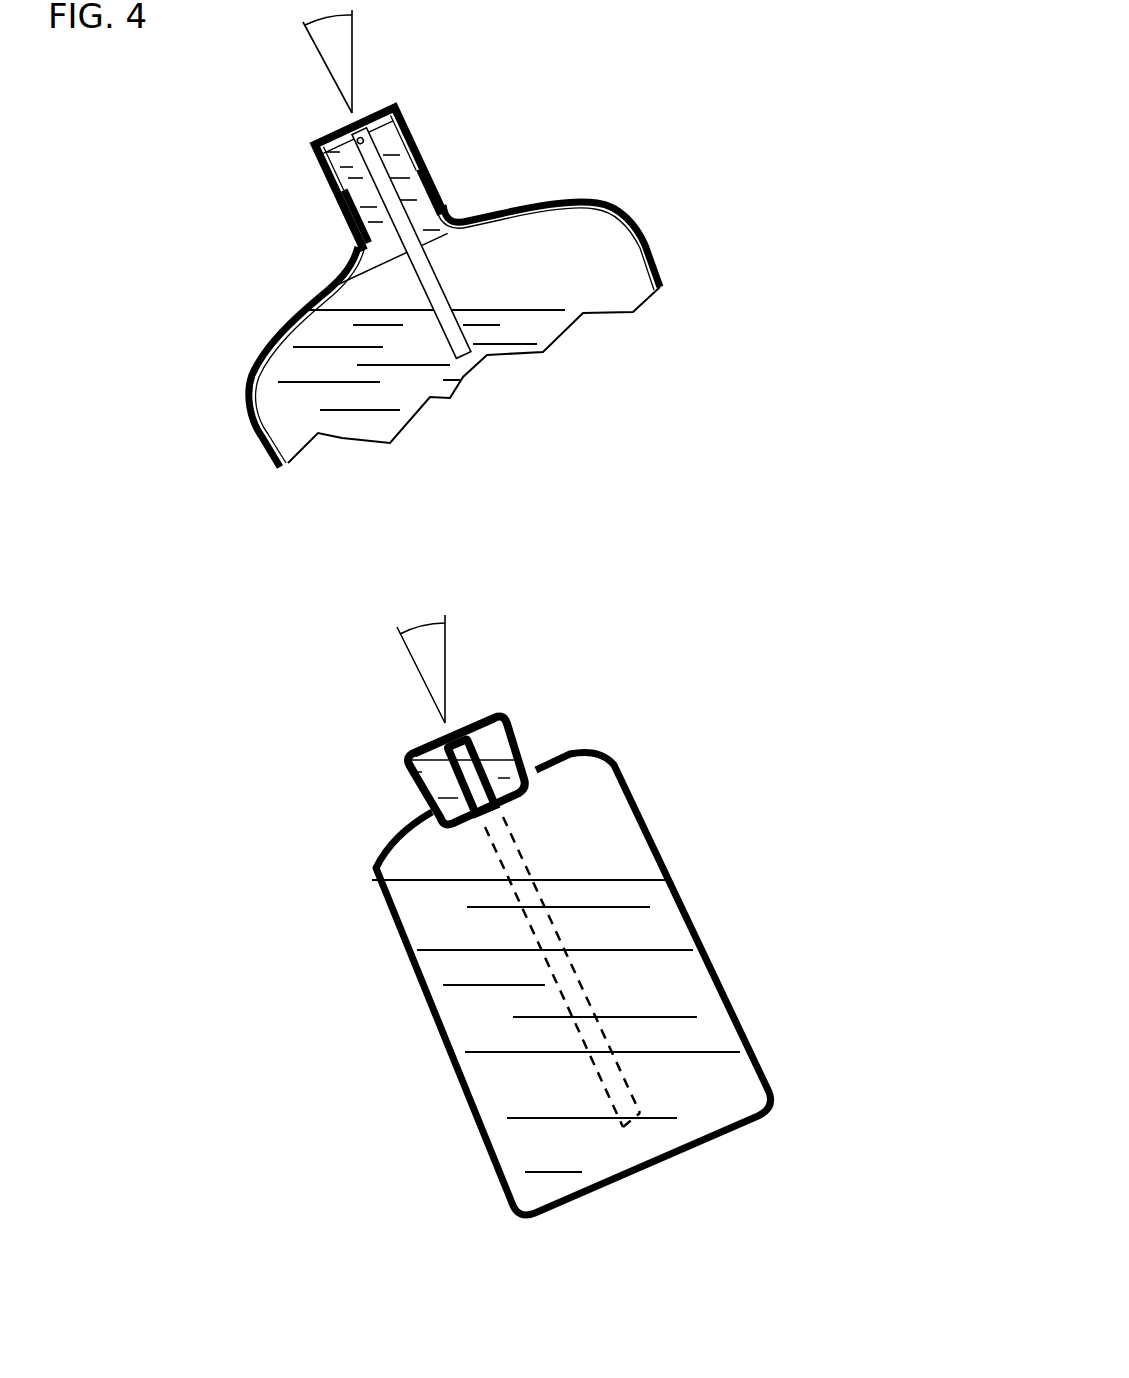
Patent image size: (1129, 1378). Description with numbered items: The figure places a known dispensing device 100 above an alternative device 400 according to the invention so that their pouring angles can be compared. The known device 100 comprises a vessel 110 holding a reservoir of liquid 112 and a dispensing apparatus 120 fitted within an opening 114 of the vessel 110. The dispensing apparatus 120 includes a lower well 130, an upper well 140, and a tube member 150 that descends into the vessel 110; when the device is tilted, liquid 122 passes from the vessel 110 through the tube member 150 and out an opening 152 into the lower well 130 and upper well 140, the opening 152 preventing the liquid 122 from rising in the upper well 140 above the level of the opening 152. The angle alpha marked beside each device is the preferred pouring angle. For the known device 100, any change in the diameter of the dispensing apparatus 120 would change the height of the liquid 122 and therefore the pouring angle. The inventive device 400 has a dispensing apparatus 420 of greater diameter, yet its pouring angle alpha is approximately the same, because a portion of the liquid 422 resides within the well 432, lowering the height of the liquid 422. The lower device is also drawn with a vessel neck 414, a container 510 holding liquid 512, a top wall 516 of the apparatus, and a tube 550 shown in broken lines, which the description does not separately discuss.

The device 100 is at (712, 77).
The vessel 110 is at (252, 418).
The liquid 112 is at (300, 367).
The opening 114 is at (447, 232).
The dispensing apparatus 120 is at (461, 176).
The liquid 122 is at (335, 177).
The lower well 130 is at (347, 222).
The upper well 140 is at (317, 158).
The tube member 150 is at (363, 285).
The opening 152 is at (365, 135).
The device 400 is at (704, 576).
The container neck 414 is at (413, 825).
The dispensing apparatus 420 is at (436, 784).
The liquid 422 is at (417, 773).
The well 432 is at (427, 817).
The container 510 is at (608, 757).
The liquid 512 is at (693, 1002).
The closure top wall 516 is at (508, 710).
The tube 550 is at (522, 858).